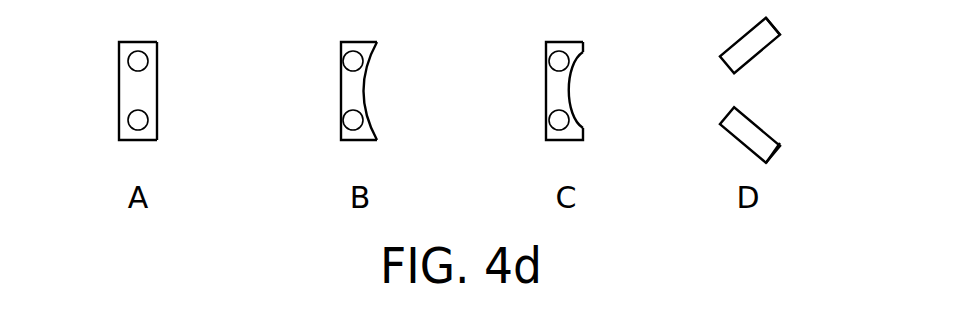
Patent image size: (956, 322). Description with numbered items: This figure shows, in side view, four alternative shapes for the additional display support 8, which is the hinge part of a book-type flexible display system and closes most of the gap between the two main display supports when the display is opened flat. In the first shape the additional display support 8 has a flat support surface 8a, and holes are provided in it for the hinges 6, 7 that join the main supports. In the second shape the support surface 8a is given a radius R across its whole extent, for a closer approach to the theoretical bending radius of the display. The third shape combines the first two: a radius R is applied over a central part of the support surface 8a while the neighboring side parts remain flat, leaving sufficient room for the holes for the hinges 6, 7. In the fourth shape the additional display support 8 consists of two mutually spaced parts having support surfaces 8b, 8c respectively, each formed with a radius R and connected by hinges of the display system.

The hinge 6 is at (139, 63).
The hinge 7 is at (139, 122).
The additional display support 8 is at (128, 92).
The support surface 8a is at (158, 88).
The support surface 8b is at (772, 38).
The support surface 8c is at (772, 142).
The radius R is at (371, 88).